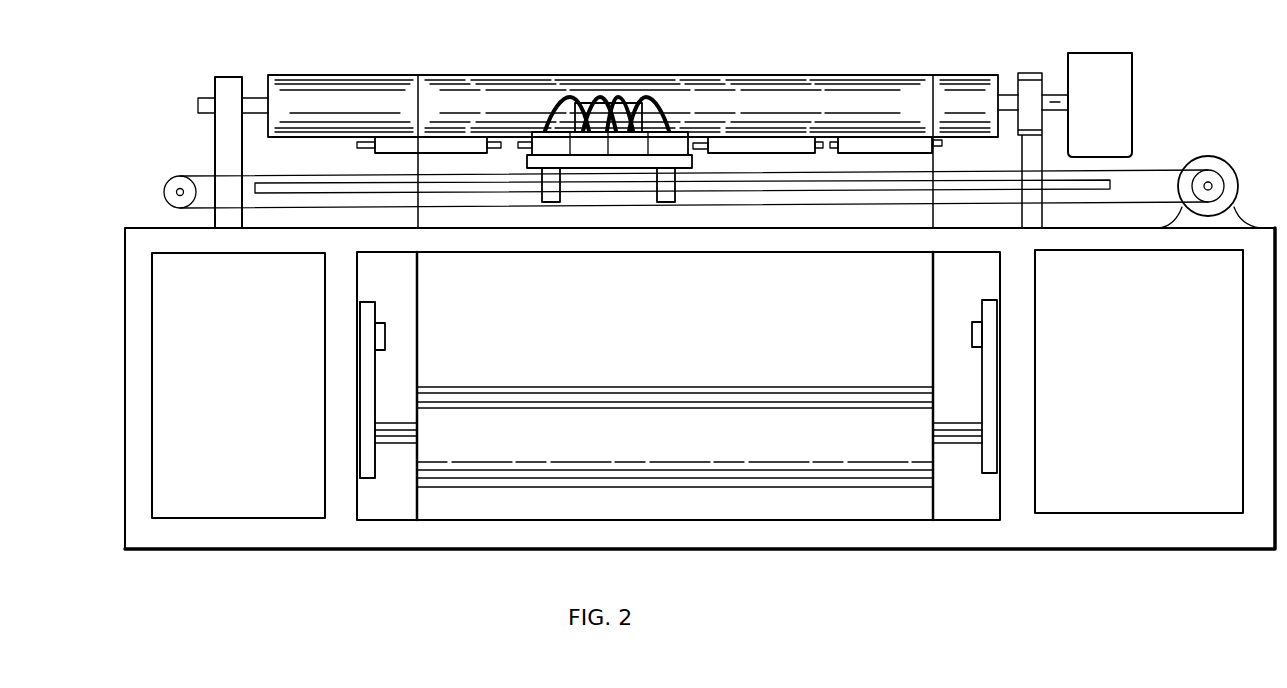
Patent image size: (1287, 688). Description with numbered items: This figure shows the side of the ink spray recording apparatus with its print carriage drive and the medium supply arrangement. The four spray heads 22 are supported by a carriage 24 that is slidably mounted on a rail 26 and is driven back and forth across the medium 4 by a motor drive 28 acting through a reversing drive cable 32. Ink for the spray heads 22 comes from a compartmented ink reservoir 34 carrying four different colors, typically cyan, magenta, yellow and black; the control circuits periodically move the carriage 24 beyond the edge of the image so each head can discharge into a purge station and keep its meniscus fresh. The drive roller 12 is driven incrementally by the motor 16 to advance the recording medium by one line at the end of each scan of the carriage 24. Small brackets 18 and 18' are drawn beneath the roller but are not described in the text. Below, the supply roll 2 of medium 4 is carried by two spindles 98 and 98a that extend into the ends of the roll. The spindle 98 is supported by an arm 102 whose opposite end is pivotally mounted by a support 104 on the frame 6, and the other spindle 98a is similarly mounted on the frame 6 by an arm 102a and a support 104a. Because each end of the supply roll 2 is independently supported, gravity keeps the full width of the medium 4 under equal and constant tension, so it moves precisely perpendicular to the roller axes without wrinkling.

The supply roll 2 is at (610, 387).
The medium 4 is at (415, 276).
The frame 6 is at (124, 446).
The drive roller 12 is at (960, 74).
The motor 16 is at (1125, 84).
The bracket 18 is at (438, 156).
The bracket 18' is at (817, 157).
The spray heads 22 is at (643, 98).
The carriage 24 is at (692, 162).
The rail 26 is at (305, 194).
The motor drive 28 is at (1220, 158).
The reversing drive cable 32 is at (1110, 201).
The compartmented ink reservoir 34 is at (677, 127).
The spindle 98 is at (396, 445).
The spindle 98a is at (953, 443).
The arm 102 is at (380, 393).
The arm 102a is at (980, 373).
The support 104 is at (385, 338).
The support 104a is at (972, 328).